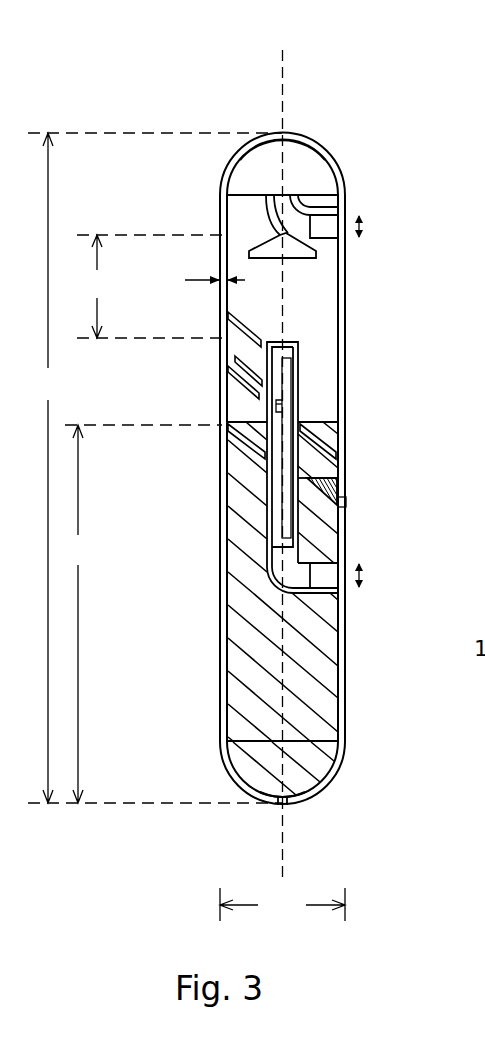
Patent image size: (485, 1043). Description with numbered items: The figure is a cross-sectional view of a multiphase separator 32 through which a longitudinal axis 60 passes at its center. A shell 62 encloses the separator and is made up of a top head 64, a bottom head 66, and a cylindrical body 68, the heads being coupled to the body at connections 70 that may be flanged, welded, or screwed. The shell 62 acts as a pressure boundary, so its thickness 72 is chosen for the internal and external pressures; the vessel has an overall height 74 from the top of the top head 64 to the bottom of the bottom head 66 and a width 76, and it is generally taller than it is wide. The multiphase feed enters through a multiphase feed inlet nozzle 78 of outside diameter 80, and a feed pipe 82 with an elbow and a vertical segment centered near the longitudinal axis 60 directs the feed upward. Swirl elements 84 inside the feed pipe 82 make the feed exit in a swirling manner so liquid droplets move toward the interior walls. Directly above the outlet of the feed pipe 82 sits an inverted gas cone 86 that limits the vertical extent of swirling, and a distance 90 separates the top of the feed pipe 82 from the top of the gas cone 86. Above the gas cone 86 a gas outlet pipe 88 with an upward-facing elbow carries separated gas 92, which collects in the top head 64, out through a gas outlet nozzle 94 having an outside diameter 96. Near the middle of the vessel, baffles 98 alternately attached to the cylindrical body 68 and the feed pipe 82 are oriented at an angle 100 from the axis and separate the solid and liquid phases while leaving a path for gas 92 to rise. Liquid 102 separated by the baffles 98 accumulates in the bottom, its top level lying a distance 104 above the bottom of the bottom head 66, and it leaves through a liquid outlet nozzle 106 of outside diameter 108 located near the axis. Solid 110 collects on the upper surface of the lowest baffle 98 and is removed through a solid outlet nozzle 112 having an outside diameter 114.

The multiphase separator 32 is at (358, 46).
The longitudinal axis 60 is at (282, 80).
The shell 62 is at (347, 333).
The top head 64 is at (270, 133).
The bottom head 66 is at (226, 768).
The cylindrical body 68 is at (221, 228).
The connections 70 is at (308, 740).
The thickness 72 is at (192, 278).
The overall height 74 is at (45, 468).
The width 76 is at (282, 904).
The multiphase feed inlet nozzle 78 is at (344, 593).
The outside diameter 80 is at (364, 576).
The feed pipe 82 is at (300, 358).
The swirl elements 84 is at (294, 382).
The gas cone 86 is at (292, 257).
The gas outlet pipe 88 is at (347, 206).
The distance 90 is at (149, 286).
The separated gas 92 is at (263, 178).
The gas outlet nozzle 94 is at (347, 238).
The outside diameter 96 is at (366, 228).
The baffles 98 is at (325, 522).
The angle 100 is at (266, 412).
The liquid 102 is at (266, 664).
The distance 104 is at (139, 614).
The liquid outlet nozzle 106 is at (283, 806).
The outside diameter 108 is at (290, 789).
The solid 110 is at (330, 476).
The solid outlet nozzle 112 is at (352, 500).
The outside diameter 114 is at (337, 503).